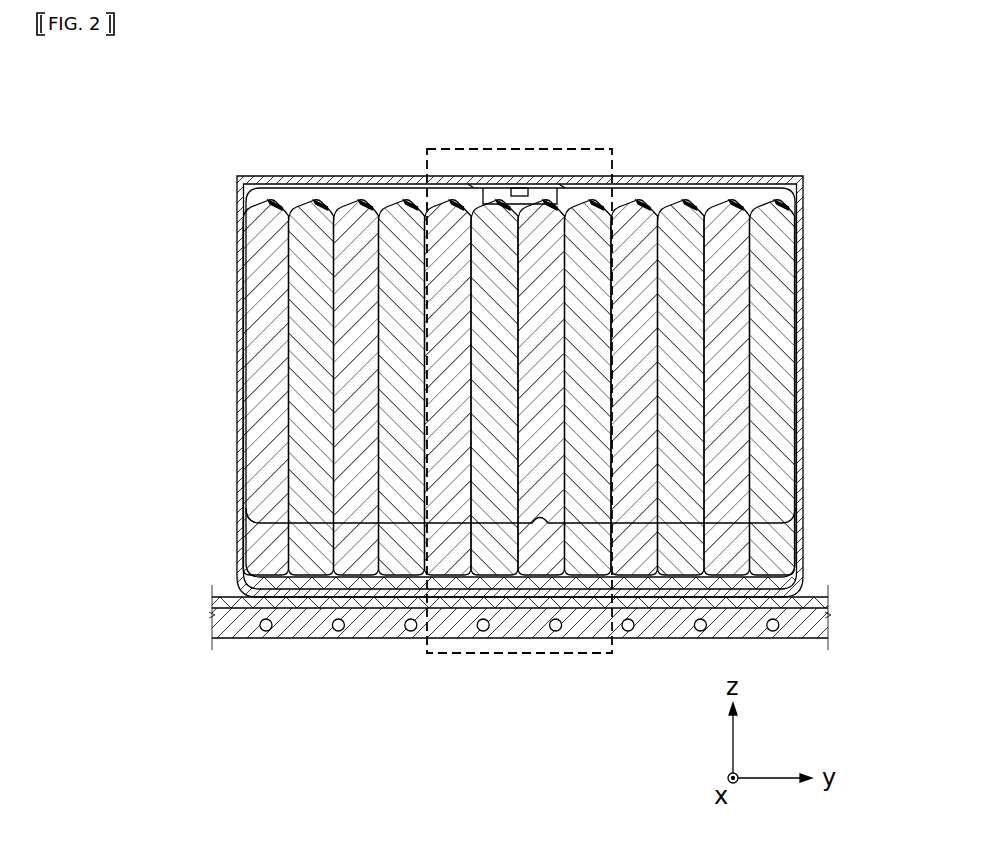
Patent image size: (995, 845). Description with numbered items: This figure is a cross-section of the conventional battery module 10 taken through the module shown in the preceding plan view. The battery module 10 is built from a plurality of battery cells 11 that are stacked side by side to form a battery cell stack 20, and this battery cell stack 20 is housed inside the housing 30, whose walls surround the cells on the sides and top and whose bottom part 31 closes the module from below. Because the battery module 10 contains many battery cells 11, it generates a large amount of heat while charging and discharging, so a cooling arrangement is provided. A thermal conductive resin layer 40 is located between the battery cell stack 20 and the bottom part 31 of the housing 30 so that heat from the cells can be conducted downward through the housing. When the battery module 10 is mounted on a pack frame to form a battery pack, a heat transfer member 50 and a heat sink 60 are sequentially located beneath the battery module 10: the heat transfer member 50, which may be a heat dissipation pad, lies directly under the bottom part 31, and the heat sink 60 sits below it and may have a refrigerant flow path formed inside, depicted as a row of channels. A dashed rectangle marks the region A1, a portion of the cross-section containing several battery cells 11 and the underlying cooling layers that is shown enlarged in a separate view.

The battery module 10 is at (502, 92).
The battery cell 11 is at (552, 387).
The battery cell stack 20 is at (520, 606).
The housing 30 is at (478, 386).
The bottom part 31 is at (482, 388).
The thermal conductive resin layer 40 is at (520, 651).
The heat transfer member 50 is at (520, 645).
The heat sink 60 is at (519, 662).
The region A1 is at (519, 366).